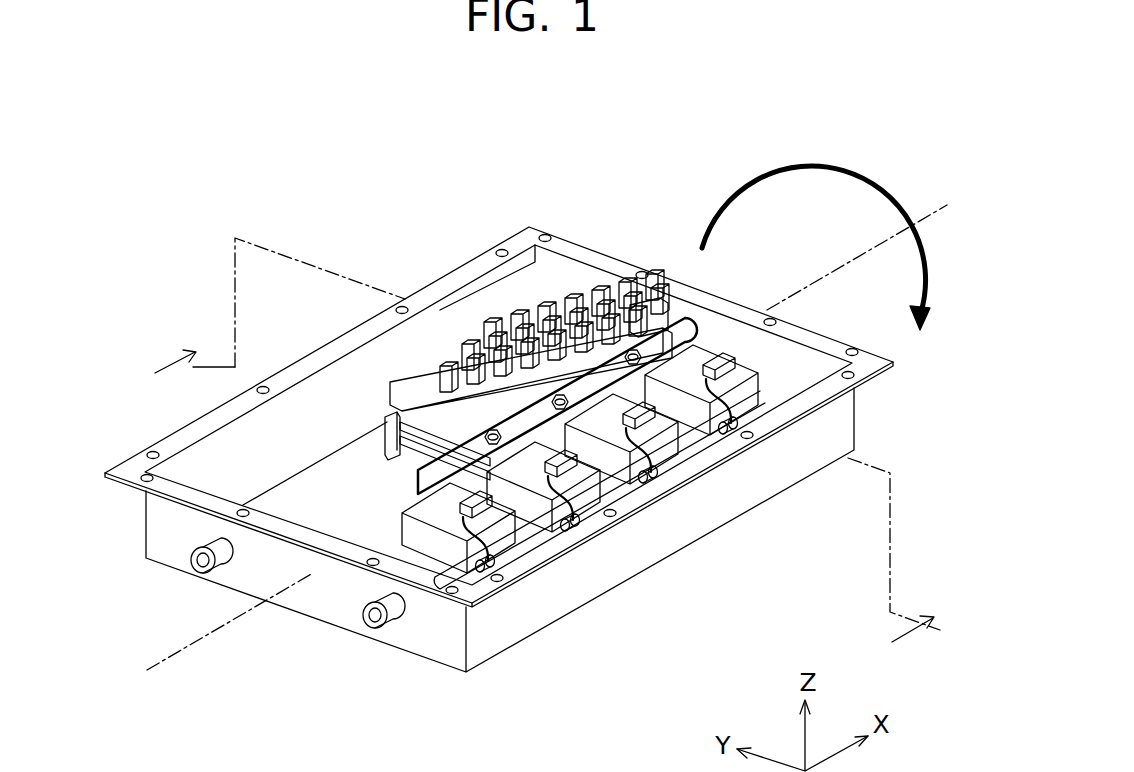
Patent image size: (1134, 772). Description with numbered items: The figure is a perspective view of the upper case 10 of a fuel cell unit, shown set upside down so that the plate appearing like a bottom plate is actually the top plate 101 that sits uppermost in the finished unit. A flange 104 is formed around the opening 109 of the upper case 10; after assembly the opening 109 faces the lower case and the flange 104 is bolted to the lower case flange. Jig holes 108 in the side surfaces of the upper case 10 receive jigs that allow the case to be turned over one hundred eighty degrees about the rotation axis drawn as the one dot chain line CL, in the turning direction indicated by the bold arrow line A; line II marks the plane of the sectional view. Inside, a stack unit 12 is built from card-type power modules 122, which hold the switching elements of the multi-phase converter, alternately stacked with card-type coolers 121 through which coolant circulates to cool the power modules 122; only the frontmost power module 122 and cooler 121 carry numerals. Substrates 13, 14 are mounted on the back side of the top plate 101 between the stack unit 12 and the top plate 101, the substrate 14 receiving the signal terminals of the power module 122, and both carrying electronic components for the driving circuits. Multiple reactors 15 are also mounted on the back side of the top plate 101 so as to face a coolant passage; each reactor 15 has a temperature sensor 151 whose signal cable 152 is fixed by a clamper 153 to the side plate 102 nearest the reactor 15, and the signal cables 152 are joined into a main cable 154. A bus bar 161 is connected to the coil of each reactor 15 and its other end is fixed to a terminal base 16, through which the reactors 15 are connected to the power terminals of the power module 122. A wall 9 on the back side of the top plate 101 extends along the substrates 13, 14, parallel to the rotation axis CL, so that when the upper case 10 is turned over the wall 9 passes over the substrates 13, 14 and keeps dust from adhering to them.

The upper case 10 is at (512, 200).
The top plate 101 is at (308, 573).
The side plate 102 is at (848, 403).
The flange 104 is at (877, 355).
The jig hole 108 is at (202, 557).
The opening 109 is at (462, 285).
The stack unit 12 is at (510, 290).
The cooler 121 is at (367, 423).
The power module 122 is at (400, 384).
The substrate 13 is at (430, 450).
The substrate 14 is at (307, 515).
The reactor 15 is at (765, 350).
The temperature sensor 151 is at (722, 360).
The signal cable 152 is at (840, 420).
The clamper 153 is at (765, 440).
The main cable 154 is at (706, 464).
The terminal base 16 is at (458, 474).
The bus bar 161 is at (645, 298).
The wall 9 is at (385, 446).
The bold arrow line A is at (828, 170).
The one dot chain line CL is at (182, 655).
The line II- II is at (538, 451).